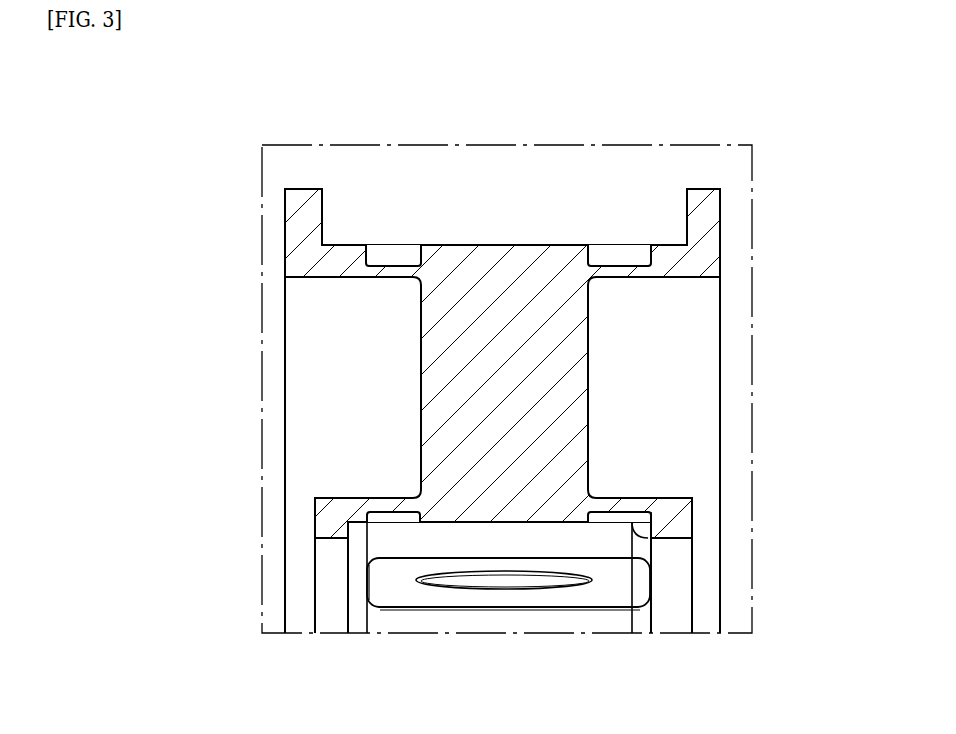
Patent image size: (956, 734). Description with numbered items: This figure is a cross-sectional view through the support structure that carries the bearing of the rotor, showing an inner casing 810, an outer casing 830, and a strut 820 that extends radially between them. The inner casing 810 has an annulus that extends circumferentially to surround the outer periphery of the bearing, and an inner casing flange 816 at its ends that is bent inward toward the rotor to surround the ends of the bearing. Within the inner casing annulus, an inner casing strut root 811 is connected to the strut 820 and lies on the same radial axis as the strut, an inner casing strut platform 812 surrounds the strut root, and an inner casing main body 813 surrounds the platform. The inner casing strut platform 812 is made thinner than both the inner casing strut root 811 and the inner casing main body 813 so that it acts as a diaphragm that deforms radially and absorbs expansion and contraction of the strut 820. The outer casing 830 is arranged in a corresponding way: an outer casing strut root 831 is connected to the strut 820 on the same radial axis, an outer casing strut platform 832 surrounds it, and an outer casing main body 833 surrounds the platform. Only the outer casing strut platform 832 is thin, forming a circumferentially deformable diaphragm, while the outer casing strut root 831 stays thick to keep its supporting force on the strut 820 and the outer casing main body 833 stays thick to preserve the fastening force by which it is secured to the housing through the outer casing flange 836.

The inner casing 810 is at (479, 601).
The inner casing strut root 811 is at (493, 512).
The inner casing strut platform 812 is at (608, 500).
The inner casing main body 813 is at (613, 518).
The inner casing flange 816 is at (683, 528).
The strut 820 is at (408, 373).
The outer casing 830 is at (482, 364).
The outer casing strut root 831 is at (517, 272).
The outer casing strut platform 832 is at (618, 273).
The outer casing main body 833 is at (670, 257).
The outer casing flange 836 is at (708, 217).